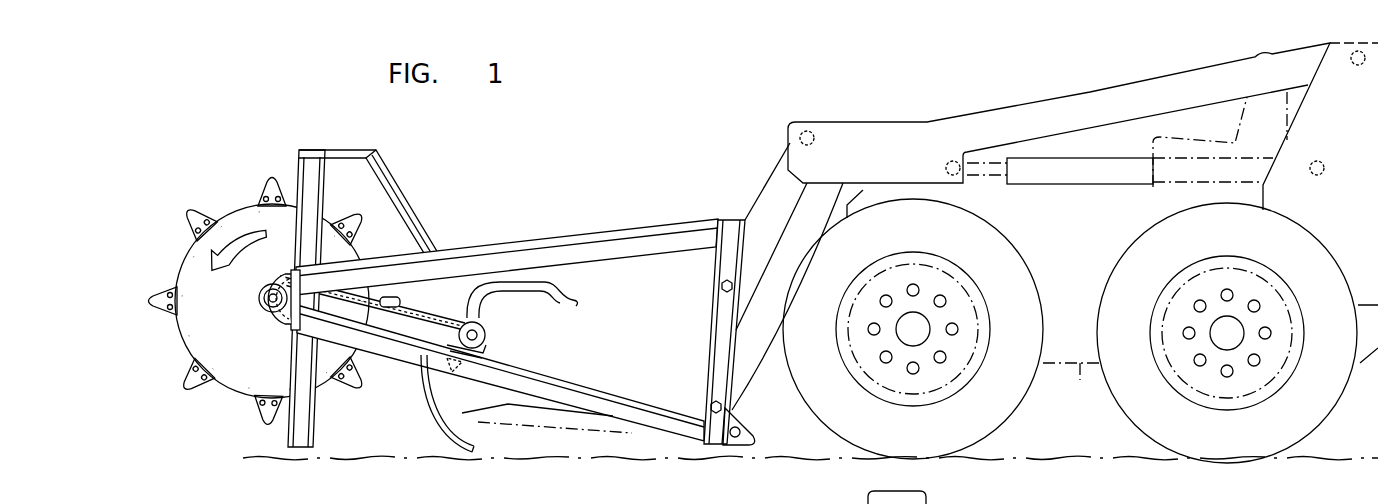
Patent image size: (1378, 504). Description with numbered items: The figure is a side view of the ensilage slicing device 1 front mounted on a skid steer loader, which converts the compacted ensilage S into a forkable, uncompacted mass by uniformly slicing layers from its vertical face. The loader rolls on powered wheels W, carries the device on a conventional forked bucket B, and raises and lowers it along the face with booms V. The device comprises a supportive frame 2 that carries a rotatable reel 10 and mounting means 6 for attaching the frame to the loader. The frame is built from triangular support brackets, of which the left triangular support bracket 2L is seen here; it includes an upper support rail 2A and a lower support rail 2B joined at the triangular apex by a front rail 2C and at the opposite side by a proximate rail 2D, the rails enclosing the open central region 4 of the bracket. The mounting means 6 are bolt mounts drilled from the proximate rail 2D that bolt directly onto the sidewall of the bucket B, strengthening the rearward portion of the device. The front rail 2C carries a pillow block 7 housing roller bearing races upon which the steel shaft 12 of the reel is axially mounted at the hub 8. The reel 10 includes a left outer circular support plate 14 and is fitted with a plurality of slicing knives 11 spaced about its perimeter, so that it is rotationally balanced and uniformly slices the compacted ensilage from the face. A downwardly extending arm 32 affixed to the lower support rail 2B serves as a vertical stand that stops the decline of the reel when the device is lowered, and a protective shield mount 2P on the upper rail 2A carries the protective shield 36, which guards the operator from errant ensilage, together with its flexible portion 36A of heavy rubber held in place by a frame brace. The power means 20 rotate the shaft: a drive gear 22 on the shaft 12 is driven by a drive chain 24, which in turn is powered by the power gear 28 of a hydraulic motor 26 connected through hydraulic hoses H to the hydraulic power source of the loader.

The ensilage slicing device 1 is at (223, 145).
The supportive frame 2 is at (516, 312).
The upper support rail 2A is at (610, 240).
The lower support rail 2B is at (670, 424).
The front rail 2C is at (282, 360).
The proximate rail 2D is at (740, 375).
The left triangular support bracket 2L is at (673, 223).
The protective shield mount 2P is at (300, 167).
The frame opening 4 is at (667, 347).
The mounting means 6 is at (722, 280).
The pillow block 7 is at (295, 272).
The hub 8 is at (258, 295).
The rotatable reel 10 is at (230, 314).
The slicing knives 11 is at (157, 283).
The shaft 12 is at (263, 312).
The left outer circular support plate 14 is at (240, 372).
The power means 20 is at (451, 323).
The drive gear 22 is at (275, 318).
The drive chain 24 is at (440, 318).
The hydraulic motor 26 is at (487, 332).
The power gear 28 is at (482, 351).
The downwardly extending arm 32 is at (307, 423).
The protective shield 36 is at (383, 173).
The flexible portion 36A is at (442, 431).
The forked bucket B is at (592, 427).
The hydraulic hoses H is at (560, 303).
The booms V is at (1092, 92).
The powered wheels W is at (1007, 402).
The ensilage S is at (1080, 380).